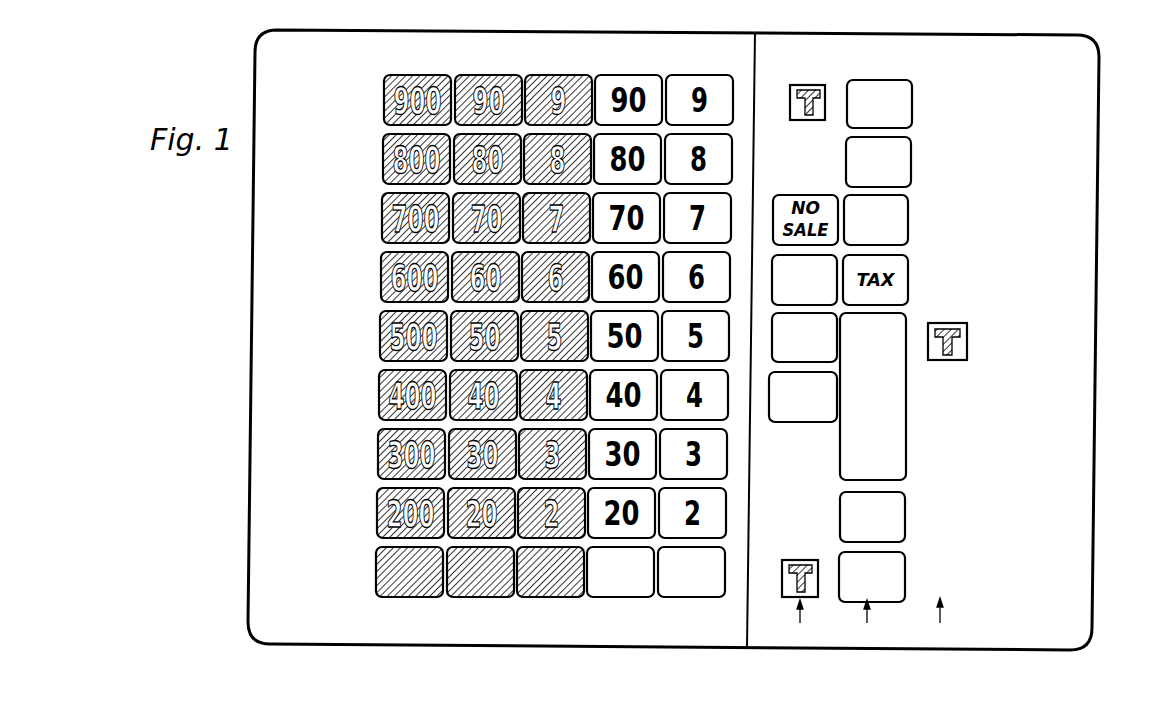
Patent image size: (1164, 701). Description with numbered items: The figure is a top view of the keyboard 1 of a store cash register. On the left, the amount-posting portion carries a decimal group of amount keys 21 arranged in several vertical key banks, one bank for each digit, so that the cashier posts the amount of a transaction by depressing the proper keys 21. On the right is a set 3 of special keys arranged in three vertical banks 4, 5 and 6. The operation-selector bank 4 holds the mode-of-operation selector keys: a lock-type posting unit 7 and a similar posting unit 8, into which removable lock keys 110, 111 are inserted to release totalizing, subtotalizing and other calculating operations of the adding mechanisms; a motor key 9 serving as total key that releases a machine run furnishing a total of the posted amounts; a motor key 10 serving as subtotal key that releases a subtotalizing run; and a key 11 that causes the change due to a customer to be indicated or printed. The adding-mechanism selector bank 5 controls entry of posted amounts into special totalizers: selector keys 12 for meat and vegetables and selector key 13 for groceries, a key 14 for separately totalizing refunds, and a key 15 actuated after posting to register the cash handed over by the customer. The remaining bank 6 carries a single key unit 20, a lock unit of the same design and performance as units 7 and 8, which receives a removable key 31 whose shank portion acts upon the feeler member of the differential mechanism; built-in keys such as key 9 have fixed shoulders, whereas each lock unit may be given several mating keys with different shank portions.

The keyboard 1 is at (247, 255).
The set of special keys 3 is at (1080, 213).
The operation-selector bank 4 is at (798, 623).
The adding-mechanism selector bank 5 is at (867, 623).
The bank 6 is at (939, 622).
The lock-type posting unit 7 is at (806, 85).
The posting unit 8 is at (805, 560).
The motor key (total key) 9 is at (773, 297).
The motor key (subtotal key) 10 is at (772, 412).
The change key 11 is at (773, 346).
The selector keys 12 is at (912, 115).
The selector key 13 is at (907, 454).
The refund key 14 is at (902, 533).
The amount received key 15 is at (902, 586).
The key unit 20 is at (967, 343).
The amount keys 21 is at (662, 596).
The key 31 is at (948, 353).
The removable lock key 110 is at (823, 90).
The removable lock key 111 is at (798, 580).